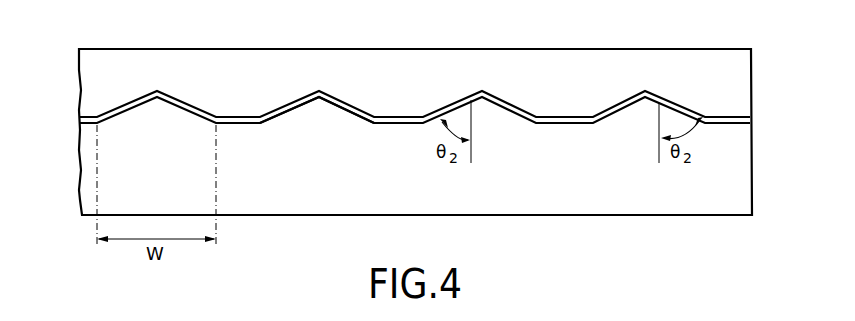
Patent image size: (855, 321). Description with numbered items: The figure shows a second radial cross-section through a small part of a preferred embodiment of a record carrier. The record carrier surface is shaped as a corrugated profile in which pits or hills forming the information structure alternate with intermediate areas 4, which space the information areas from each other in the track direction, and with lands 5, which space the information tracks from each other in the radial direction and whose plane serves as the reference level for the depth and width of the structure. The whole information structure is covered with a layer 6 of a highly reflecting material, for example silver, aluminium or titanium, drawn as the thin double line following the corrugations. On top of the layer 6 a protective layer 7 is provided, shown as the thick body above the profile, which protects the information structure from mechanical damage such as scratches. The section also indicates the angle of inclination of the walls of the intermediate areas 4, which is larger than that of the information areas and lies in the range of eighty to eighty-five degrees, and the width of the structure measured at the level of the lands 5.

The intermediate areas 4 is at (319, 98).
The lands 5 is at (243, 124).
The layer of highly reflecting material 6 is at (283, 110).
The protective layer 7 is at (578, 58).